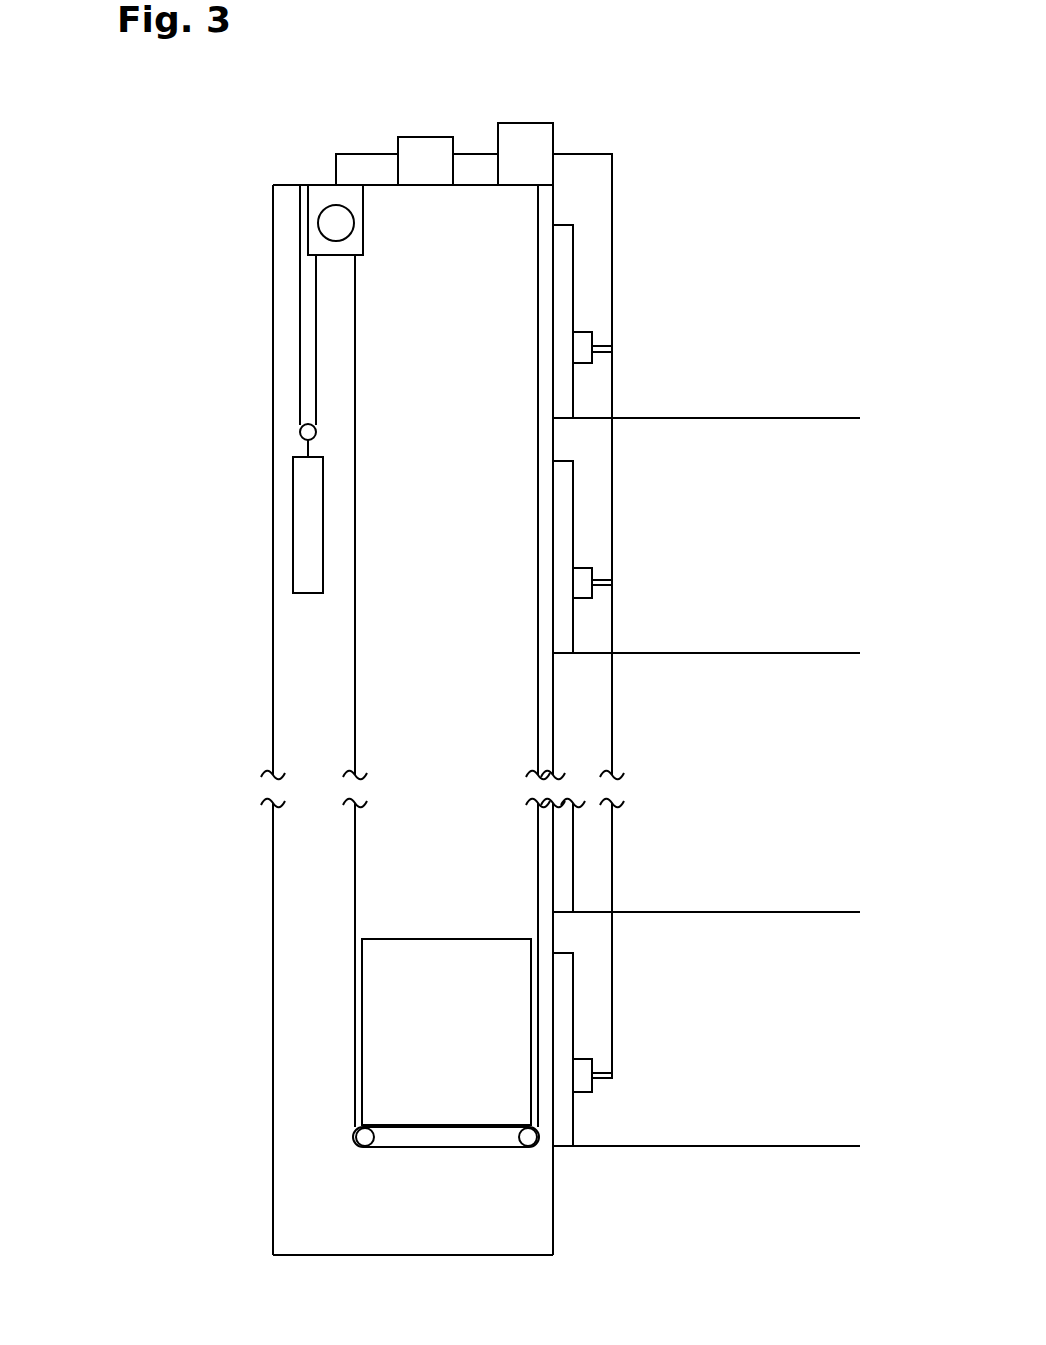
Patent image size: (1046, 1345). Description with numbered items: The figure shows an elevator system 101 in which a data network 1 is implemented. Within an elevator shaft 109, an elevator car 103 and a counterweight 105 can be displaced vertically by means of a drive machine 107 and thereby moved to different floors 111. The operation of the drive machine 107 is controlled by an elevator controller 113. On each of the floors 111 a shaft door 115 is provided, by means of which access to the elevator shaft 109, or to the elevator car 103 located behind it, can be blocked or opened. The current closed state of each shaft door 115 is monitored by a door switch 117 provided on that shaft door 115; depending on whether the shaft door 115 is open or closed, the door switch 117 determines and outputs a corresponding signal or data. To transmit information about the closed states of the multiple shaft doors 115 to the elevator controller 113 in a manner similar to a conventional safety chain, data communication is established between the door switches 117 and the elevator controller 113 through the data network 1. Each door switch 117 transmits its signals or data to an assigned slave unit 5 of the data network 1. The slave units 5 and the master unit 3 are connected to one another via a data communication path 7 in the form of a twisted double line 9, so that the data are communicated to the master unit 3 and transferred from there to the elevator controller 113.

The data network 1 is at (461, 640).
The master unit 3 is at (585, 105).
The slave unit 5 is at (675, 739).
The data communication path 7 is at (613, 650).
The twisted double line 9 is at (613, 270).
The elevator system 101 is at (361, 720).
The elevator car 103 is at (470, 1048).
The counterweight 105 is at (308, 518).
The drive machine 107 is at (407, 253).
The elevator shaft 109 is at (443, 1230).
The floor 111 is at (840, 407).
The elevator controller 113 is at (362, 108).
The shaft door 115 is at (711, 683).
The door switch 117 is at (731, 691).